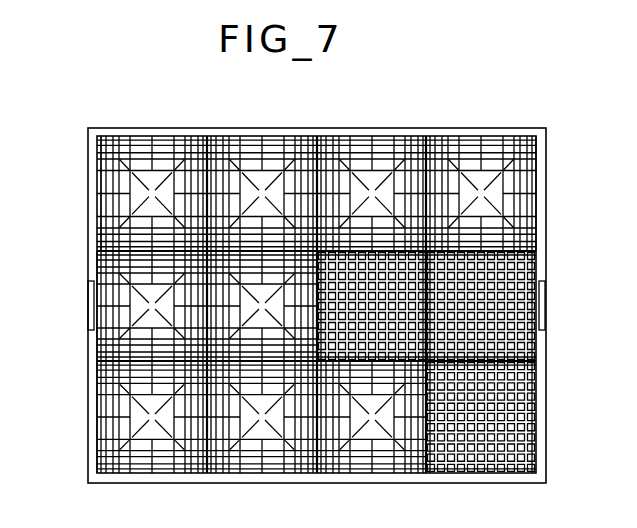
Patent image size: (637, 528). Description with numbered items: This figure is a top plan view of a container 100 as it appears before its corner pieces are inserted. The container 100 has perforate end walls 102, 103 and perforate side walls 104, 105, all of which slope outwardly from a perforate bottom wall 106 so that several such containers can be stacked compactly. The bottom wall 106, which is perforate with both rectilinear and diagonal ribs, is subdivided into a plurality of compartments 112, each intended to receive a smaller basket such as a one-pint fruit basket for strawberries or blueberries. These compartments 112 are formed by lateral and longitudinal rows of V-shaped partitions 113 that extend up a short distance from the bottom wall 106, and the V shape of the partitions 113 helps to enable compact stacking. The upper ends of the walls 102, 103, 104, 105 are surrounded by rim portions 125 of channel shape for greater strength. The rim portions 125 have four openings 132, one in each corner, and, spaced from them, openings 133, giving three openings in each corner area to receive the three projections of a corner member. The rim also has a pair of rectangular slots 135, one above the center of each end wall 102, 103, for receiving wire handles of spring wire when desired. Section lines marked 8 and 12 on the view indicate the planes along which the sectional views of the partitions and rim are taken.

The container 100 is at (406, 102).
The end wall 102 is at (90, 352).
The end wall 103 is at (530, 172).
The side wall 104 is at (315, 467).
The side wall 105 is at (290, 137).
The bottom wall 106 is at (103, 187).
The compartment 112 is at (235, 140).
The V-shaped partition 113 is at (92, 240).
The rim portion 125 is at (85, 405).
The opening 132 is at (84, 122).
The opening 133 is at (58, 134).
The rectangular slot 135 is at (84, 292).
The section line 8- 8 is at (75, 307).
The section line 12- 12 is at (258, 243).